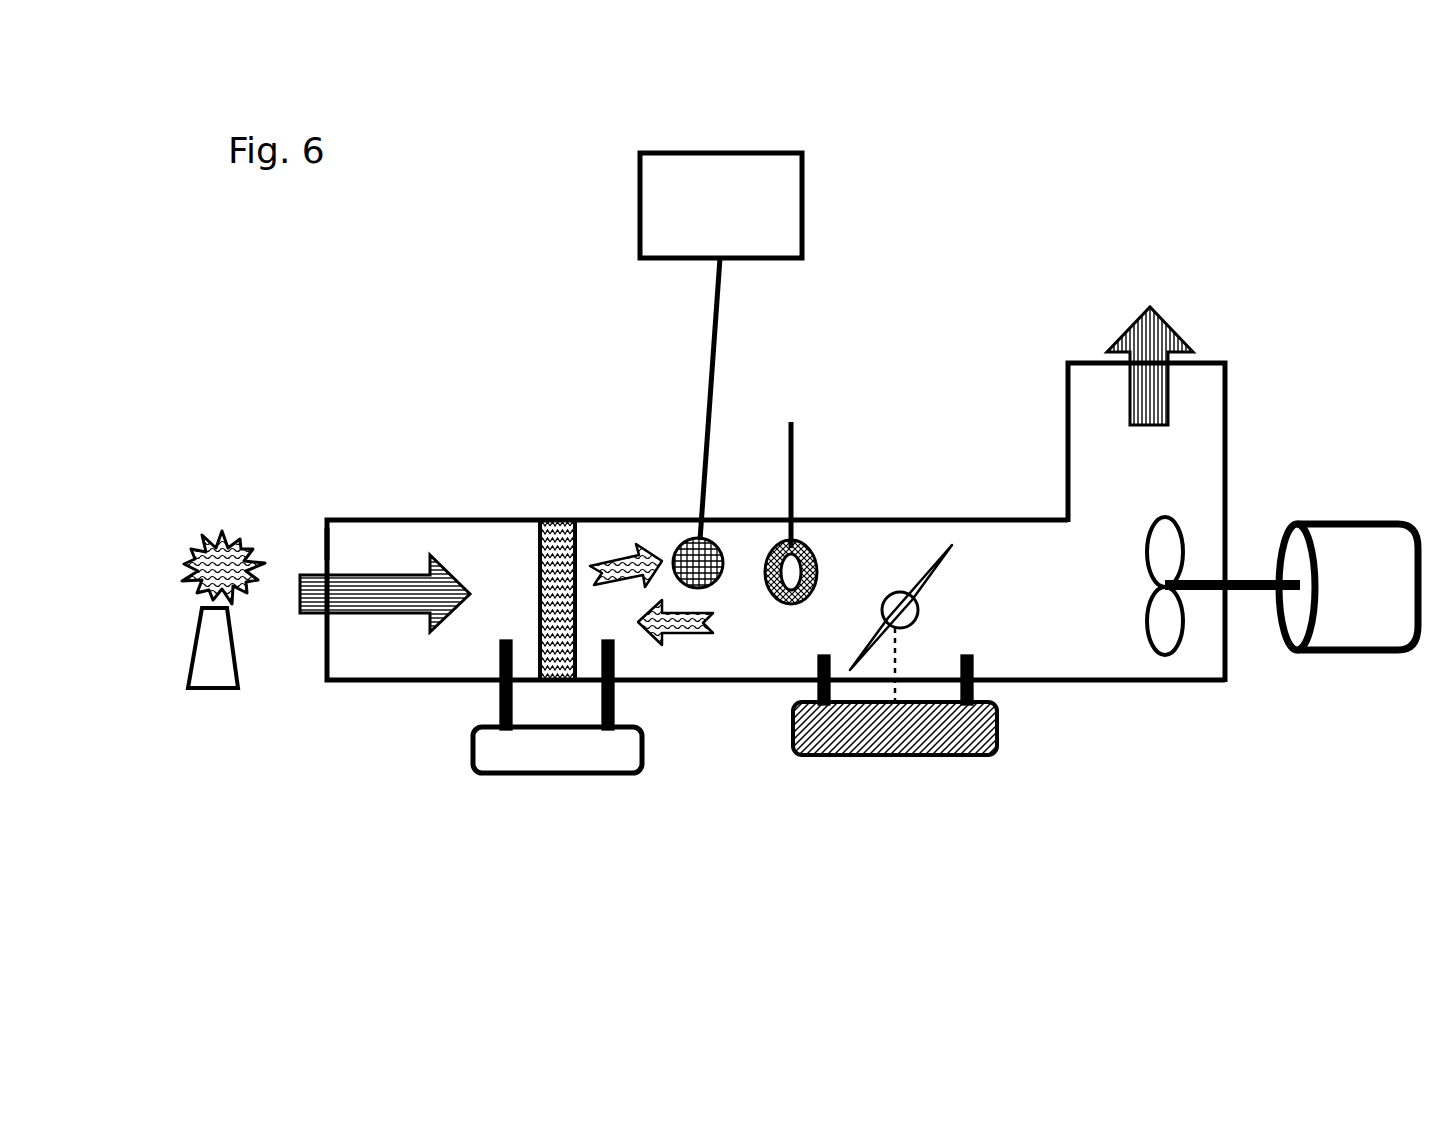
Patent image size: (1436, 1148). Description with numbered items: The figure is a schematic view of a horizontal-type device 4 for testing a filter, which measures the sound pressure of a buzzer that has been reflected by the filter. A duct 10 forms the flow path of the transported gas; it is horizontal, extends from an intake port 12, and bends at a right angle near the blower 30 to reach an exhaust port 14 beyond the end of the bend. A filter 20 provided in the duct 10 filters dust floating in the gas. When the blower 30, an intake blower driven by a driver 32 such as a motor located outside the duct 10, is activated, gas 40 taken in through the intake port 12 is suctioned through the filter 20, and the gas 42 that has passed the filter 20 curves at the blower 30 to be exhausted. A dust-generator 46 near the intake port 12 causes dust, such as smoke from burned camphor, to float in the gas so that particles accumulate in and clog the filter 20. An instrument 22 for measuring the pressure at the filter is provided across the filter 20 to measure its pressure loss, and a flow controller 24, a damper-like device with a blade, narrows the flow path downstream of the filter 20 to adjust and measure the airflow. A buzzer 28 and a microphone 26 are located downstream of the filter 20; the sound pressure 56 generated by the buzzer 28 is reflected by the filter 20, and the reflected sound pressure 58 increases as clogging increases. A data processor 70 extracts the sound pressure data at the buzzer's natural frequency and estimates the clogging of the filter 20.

The horizontal-type device for testing a filter 4 is at (1126, 154).
The duct 10 is at (898, 513).
The intake port 12 is at (325, 525).
The exhaust port 14 is at (1078, 363).
The filter 20 is at (550, 520).
The instrument for measuring the pressure at the filter 22 is at (556, 760).
The flow controller 24 is at (880, 752).
The microphone 26 is at (695, 514).
The buzzer 28 is at (798, 518).
The blower 30 is at (1163, 655).
The driver 32 is at (1347, 650).
The gas 40 is at (360, 598).
The gas 42 is at (1160, 347).
The dust-generator 46 is at (210, 533).
The sound pressure 56 is at (682, 640).
The reflected sound pressure 58 is at (605, 545).
The data processor 70 is at (724, 153).